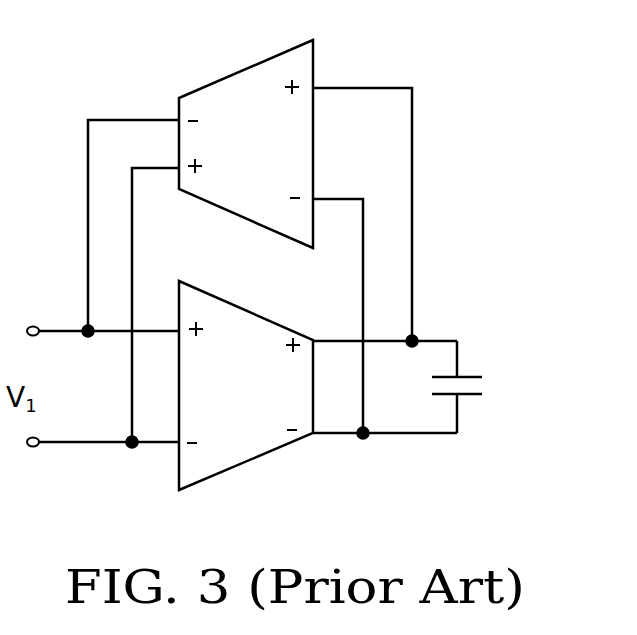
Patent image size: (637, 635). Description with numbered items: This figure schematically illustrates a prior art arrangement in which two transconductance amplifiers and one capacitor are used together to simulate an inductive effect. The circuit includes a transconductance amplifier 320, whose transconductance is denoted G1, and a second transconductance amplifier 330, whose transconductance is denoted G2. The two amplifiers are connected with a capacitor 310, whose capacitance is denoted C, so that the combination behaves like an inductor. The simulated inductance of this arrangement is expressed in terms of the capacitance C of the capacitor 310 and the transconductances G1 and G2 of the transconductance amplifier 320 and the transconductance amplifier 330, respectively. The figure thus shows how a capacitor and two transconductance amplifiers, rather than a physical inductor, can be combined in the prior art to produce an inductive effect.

The capacitor 310 is at (468, 377).
The transconductance amplifier 320 is at (247, 462).
The transconductance amplifier 330 is at (313, 62).